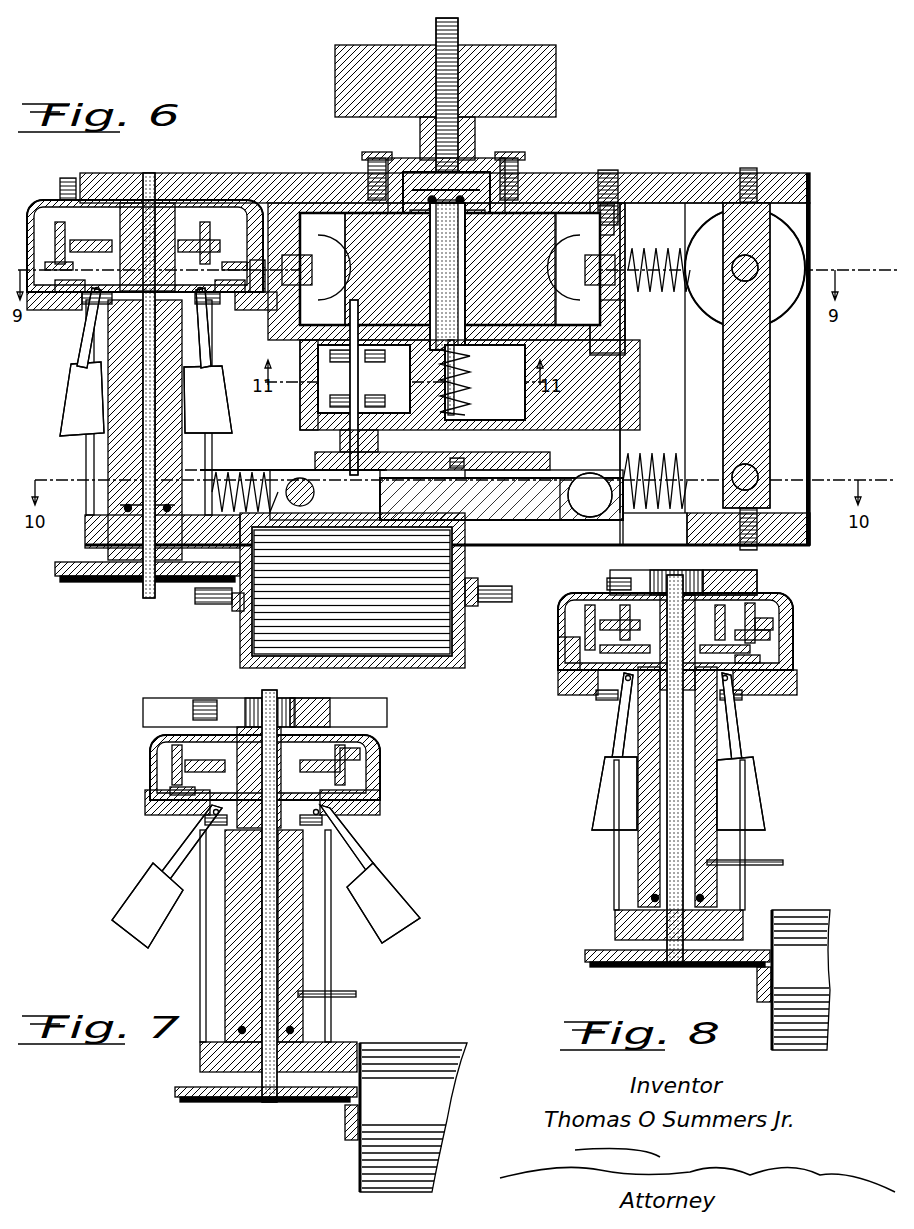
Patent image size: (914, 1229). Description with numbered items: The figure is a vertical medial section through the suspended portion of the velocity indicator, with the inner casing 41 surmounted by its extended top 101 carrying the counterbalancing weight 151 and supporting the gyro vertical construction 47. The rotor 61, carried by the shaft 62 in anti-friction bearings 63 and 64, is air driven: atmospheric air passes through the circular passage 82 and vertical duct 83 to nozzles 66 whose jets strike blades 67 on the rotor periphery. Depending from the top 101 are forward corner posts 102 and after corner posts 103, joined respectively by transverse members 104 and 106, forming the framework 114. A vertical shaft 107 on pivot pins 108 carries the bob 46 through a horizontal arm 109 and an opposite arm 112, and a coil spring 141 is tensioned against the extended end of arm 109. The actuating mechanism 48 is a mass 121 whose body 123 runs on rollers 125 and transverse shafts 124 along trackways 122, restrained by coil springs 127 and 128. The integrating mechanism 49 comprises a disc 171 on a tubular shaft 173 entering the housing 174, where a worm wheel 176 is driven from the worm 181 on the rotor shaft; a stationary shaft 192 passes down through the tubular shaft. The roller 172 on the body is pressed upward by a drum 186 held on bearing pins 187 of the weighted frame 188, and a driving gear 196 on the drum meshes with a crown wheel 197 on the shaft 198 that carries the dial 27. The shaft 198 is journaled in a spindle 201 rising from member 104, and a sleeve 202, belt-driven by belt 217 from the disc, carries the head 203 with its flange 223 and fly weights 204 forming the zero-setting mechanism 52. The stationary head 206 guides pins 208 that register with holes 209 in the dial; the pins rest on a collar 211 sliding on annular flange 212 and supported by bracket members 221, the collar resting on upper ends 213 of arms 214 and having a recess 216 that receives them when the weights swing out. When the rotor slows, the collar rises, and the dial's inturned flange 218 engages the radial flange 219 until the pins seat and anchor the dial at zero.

In FIG. 6, the weight 151 is at (540, 75).
In FIG. 6, the anti-friction bearing 63 is at (432, 188).
In FIG. 6, the top of the inner casing 101 is at (543, 178).
In FIG. 6, the circular passage 82 is at (608, 178).
In FIG. 6, the vertical duct 83 is at (618, 219).
In FIG. 6, the pivot pin 108 is at (748, 170).
In FIG. 6, the framework 114 is at (810, 178).
In FIG. 6, the after corner post 103 is at (812, 410).
In FIG. 6, the vertical shaft 107 is at (760, 375).
In FIG. 6, the bob 46 is at (798, 253).
In FIG. 6, the horizontal arm 109 is at (738, 272).
In FIG. 6, the horizontal arm 112 is at (760, 474).
In FIG. 6, the transverse member 106 is at (784, 522).
In FIG. 6, the trackway 122 is at (665, 536).
In FIG. 6, the gyro vertical construction 47 is at (612, 357).
In FIG. 6, the inner casing 41 is at (620, 333).
In FIG. 6, the coil spring 141 is at (659, 285).
In FIG. 6, the rotor 61 is at (525, 308).
In FIG. 6, the nozzle 66 is at (330, 264).
In FIG. 6, the blade 67 is at (565, 262).
In FIG. 6, the shaft 62 is at (438, 344).
In FIG. 6, the anti-friction bearing 64 is at (495, 420).
In FIG. 6, the housing 174 is at (315, 362).
In FIG. 6, the worm 181 is at (488, 361).
In FIG. 6, the worm wheel 176 is at (378, 390).
In FIG. 6, the stationary shaft 192 is at (353, 360).
In FIG. 6, the tubular shaft 173 is at (378, 440).
In FIG. 6, the disc 171 is at (425, 462).
In FIG. 6, the belt 217 is at (462, 466).
In FIG. 7, the belt 217 is at (344, 992).
In FIG. 8, the belt 217 is at (760, 860).
In FIG. 6, the integrating mechanism 49 is at (306, 445).
In FIG. 6, the transverse shaft 124 is at (300, 478).
In FIG. 6, the actuating mechanism 48 is at (532, 470).
In FIG. 6, the mass 121 is at (556, 470).
In FIG. 6, the roller 125 is at (597, 472).
In FIG. 6, the body 123 is at (488, 506).
In FIG. 6, the coil spring 128 is at (650, 465).
In FIG. 6, the coil spring 127 is at (238, 506).
In FIG. 6, the drum 186 is at (465, 631).
In FIG. 7, the drum 186 is at (422, 1048).
In FIG. 8, the drum 186 is at (812, 971).
In FIG. 6, the roller 172 is at (353, 560).
In FIG. 6, the pivotal bearing pin 187 is at (482, 587).
In FIG. 6, the frame 188 is at (195, 606).
In FIG. 6, the driving gear 196 is at (225, 606).
In FIG. 7, the driving gear 196 is at (350, 1137).
In FIG. 8, the driving gear 196 is at (756, 976).
In FIG. 6, the crown wheel 197 is at (58, 574).
In FIG. 7, the crown wheel 197 is at (174, 1094).
In FIG. 8, the crown wheel 197 is at (584, 960).
In FIG. 6, the transverse member 104 is at (100, 526).
In FIG. 7, the transverse member 104 is at (200, 1056).
In FIG. 8, the transverse member 104 is at (615, 921).
In FIG. 6, the spindle 201 is at (122, 510).
In FIG. 7, the spindle 201 is at (300, 1038).
In FIG. 8, the spindle 201 is at (645, 905).
In FIG. 6, the forward corner post 102 is at (90, 447).
In FIG. 7, the forward corner post 102 is at (322, 950).
In FIG. 8, the forward corner post 102 is at (735, 888).
In FIG. 6, the sleeve 202 is at (110, 410).
In FIG. 7, the sleeve 202 is at (228, 965).
In FIG. 8, the sleeve 202 is at (642, 775).
In FIG. 6, the shaft 198 is at (146, 384).
In FIG. 7, the shaft 198 is at (266, 1100).
In FIG. 8, the shaft 198 is at (686, 770).
In FIG. 6, the fly weight 204 is at (222, 420).
In FIG. 7, the fly weight 204 is at (150, 920).
In FIG. 8, the fly weight 204 is at (630, 814).
In FIG. 6, the zero-setting mechanism 52 is at (228, 390).
In FIG. 7, the zero-setting mechanism 52 is at (400, 828).
In FIG. 8, the zero-setting mechanism 52 is at (767, 785).
In FIG. 6, the annular flange 212 is at (78, 370).
In FIG. 7, the annular flange 212 is at (292, 768).
In FIG. 8, the annular flange 212 is at (638, 675).
In FIG. 6, the arm 214 is at (206, 344).
In FIG. 7, the arm 214 is at (192, 822).
In FIG. 8, the arm 214 is at (730, 735).
In FIG. 6, the dial 27 is at (22, 235).
In FIG. 7, the dial 27 is at (148, 797).
In FIG. 8, the dial 27 is at (560, 652).
In FIG. 6, the inturned peripheral flange 218 is at (42, 312).
In FIG. 7, the inturned peripheral flange 218 is at (376, 816).
In FIG. 8, the inturned peripheral flange 218 is at (560, 680).
In FIG. 6, the flange 223 is at (90, 318).
In FIG. 7, the flange 223 is at (148, 822).
In FIG. 8, the flange 223 is at (795, 692).
In FIG. 6, the head 203 is at (64, 296).
In FIG. 7, the head 203 is at (182, 814).
In FIG. 8, the head 203 is at (752, 690).
In FIG. 6, the radially extending flange 219 is at (256, 225).
In FIG. 7, the radially extending flange 219 is at (364, 797).
In FIG. 8, the radially extending flange 219 is at (575, 666).
In FIG. 6, the bracket member 221 is at (232, 300).
In FIG. 7, the bracket member 221 is at (178, 790).
In FIG. 8, the bracket member 221 is at (762, 637).
In FIG. 6, the collar 211 is at (213, 298).
In FIG. 7, the collar 211 is at (226, 824).
In FIG. 8, the collar 211 is at (602, 695).
In FIG. 6, the circular recess 216 is at (62, 232).
In FIG. 7, the circular recess 216 is at (246, 740).
In FIG. 8, the circular recess 216 is at (720, 650).
In FIG. 6, the stationary head 206 is at (95, 205).
In FIG. 7, the stationary head 206 is at (355, 757).
In FIG. 8, the stationary head 206 is at (775, 620).
In FIG. 6, the upper end 213 is at (160, 222).
In FIG. 7, the upper end 213 is at (215, 790).
In FIG. 8, the upper end 213 is at (748, 658).
In FIG. 6, the pin 208 is at (192, 222).
In FIG. 7, the pin 208 is at (322, 755).
In FIG. 8, the pin 208 is at (760, 606).
In FIG. 6, the hole 209 is at (222, 222).
In FIG. 7, the hole 209 is at (305, 740).